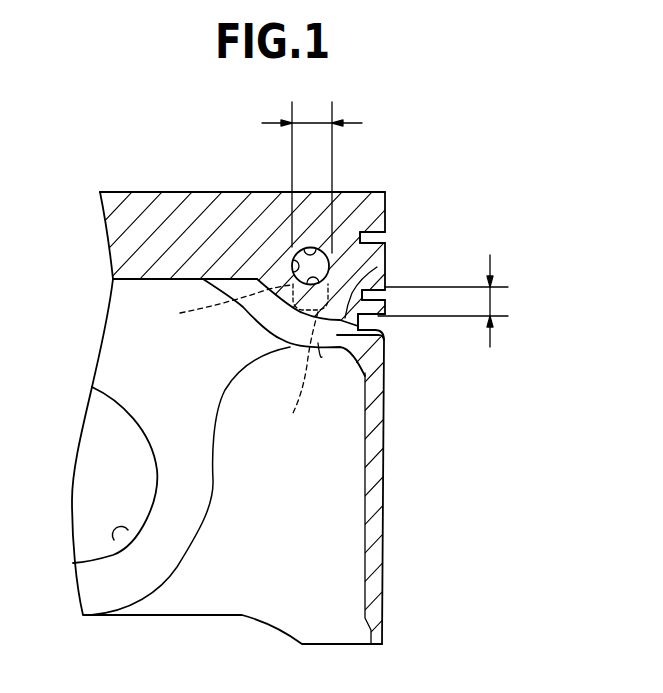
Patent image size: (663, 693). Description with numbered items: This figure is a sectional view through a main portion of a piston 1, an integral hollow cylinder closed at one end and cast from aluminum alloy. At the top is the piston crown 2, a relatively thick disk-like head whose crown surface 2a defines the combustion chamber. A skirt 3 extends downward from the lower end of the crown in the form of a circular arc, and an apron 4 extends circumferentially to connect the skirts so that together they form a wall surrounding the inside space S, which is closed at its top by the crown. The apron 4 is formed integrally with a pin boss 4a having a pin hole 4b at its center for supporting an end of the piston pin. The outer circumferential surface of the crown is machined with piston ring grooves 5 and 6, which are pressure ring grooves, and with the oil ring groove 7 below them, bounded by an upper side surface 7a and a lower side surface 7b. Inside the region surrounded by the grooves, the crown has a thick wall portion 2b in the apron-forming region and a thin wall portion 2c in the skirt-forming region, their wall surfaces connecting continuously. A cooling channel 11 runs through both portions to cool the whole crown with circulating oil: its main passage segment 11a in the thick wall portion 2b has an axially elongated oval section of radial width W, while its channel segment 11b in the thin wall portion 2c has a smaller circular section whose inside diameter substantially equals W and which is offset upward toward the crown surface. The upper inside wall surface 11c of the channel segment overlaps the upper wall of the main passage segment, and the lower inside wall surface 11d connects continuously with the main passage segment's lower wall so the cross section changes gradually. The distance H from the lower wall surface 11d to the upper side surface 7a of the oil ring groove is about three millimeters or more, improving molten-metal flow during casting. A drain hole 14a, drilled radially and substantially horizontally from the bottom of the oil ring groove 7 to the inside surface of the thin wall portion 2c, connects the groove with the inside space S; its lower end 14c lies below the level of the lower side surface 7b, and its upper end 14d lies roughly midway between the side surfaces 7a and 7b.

The piston 1 is at (440, 472).
The piston crown 2 is at (147, 223).
The crown surface 2a is at (175, 192).
The thick wall portion 2b is at (262, 327).
The thin wall portion 2c is at (318, 343).
The skirt 3 is at (384, 552).
The apron 4 is at (207, 590).
The pin boss 4a is at (95, 595).
The pin hole 4b is at (118, 537).
The piston ring groove 5 is at (375, 237).
The piston ring groove 6 is at (378, 289).
The oil ring groove 7 is at (372, 323).
The upper side surface of oil ring groove 7a is at (372, 320).
The lower side surface of oil ring groove 7b is at (385, 338).
The cooling channel 11 is at (300, 300).
The main passage segment 11a is at (232, 306).
The channel segment 11b is at (292, 250).
The upper inside wall surface of channel segment 11c is at (298, 248).
The lower inside wall surface of channel segment 11d is at (300, 300).
The drain hole 14a is at (347, 335).
The lower end of drain hole inside surface 14c is at (380, 340).
The upper end of drain hole inside surface 14d is at (377, 267).
The inside space S is at (252, 595).
The width W is at (312, 176).
The distance H is at (446, 301).